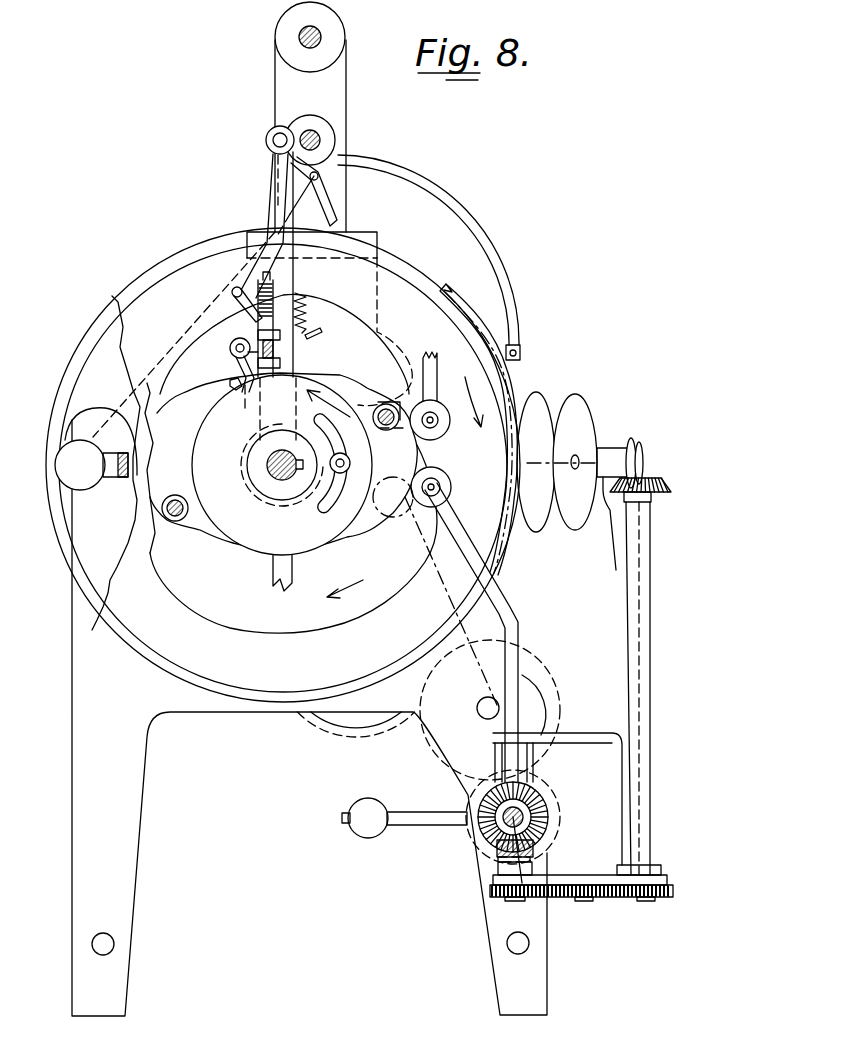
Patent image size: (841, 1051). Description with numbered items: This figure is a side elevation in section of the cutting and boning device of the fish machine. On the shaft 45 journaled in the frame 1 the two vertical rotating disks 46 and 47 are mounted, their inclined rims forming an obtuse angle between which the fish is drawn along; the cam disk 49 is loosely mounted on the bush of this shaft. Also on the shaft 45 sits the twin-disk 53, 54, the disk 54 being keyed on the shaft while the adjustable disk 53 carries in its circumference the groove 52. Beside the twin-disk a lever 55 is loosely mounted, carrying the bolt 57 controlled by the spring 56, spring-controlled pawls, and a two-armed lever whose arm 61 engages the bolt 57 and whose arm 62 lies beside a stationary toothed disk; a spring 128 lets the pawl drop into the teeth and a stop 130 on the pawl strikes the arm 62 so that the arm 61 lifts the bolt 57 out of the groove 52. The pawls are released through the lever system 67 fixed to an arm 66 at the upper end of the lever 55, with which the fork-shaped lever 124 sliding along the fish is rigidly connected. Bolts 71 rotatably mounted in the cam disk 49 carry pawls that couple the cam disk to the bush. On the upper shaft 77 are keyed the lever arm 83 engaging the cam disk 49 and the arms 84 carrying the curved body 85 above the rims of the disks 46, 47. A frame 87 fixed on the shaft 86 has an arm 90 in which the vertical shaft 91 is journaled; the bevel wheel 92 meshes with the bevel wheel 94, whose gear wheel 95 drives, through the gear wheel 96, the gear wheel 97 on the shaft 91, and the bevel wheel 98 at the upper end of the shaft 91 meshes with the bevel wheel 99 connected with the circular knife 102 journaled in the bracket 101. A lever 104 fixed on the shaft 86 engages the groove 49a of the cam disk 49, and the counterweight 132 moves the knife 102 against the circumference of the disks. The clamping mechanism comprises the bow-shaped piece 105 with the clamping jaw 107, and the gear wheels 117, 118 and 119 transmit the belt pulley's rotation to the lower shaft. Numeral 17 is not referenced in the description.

The frame 1 is at (140, 742).
The pawl 17 is at (228, 382).
The shaft 45 is at (287, 455).
The rotating disk 46 is at (146, 271).
The rotating disk 47 is at (70, 360).
The cam disk 49 is at (195, 598).
The groove of the cam disk 49a is at (190, 533).
The groove 52 is at (372, 402).
The disk 53 is at (200, 447).
The disk 54 is at (250, 474).
The lever 55 is at (268, 184).
The spring 56 is at (277, 292).
The bolt 57 is at (296, 373).
The arm of two-armed lever 61 is at (243, 341).
The arm of two-armed lever 62 is at (236, 371).
The arm 66 is at (266, 140).
The lever system 67 is at (238, 283).
The bolt 71 is at (176, 500).
The upper shaft 77 is at (313, 128).
The lever arm 83 is at (438, 376).
The arm 84 is at (450, 195).
The curved body 85 is at (518, 386).
The shaft 86 is at (540, 830).
The frame 87 is at (497, 760).
The arm 90 is at (600, 866).
The vertical shaft 91 is at (651, 630).
The bevel wheel 92 is at (549, 817).
The bevel wheel 94 is at (486, 848).
The gear wheel 95 is at (488, 890).
The gear wheel 96 is at (593, 898).
The gear wheel 97 is at (663, 899).
The bevel wheel 98 is at (668, 484).
The bevel wheel 99 is at (641, 449).
The bracket 101 is at (548, 512).
The circular knife 102 is at (585, 418).
The lever 104 is at (468, 504).
The bow-shaped piece 105 is at (112, 418).
The clamping jaw 107 is at (88, 490).
The gear wheel 117 is at (336, 727).
The gear wheel 118 is at (534, 658).
The gear wheel 119 is at (556, 792).
The fork-shaped lever 124 is at (333, 210).
The spring 128 is at (305, 297).
The stop 130 is at (250, 400).
The counterweight 132 is at (372, 792).